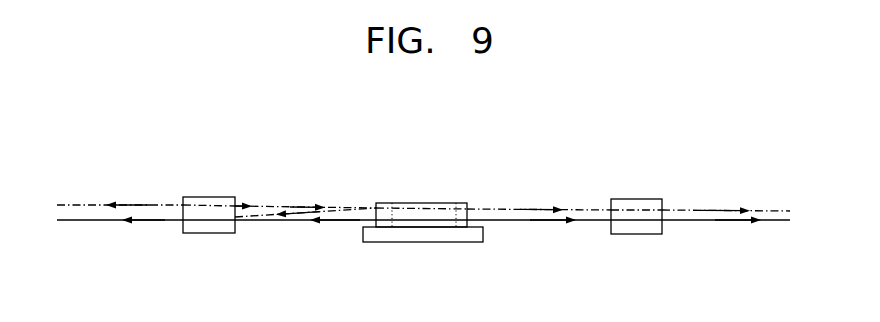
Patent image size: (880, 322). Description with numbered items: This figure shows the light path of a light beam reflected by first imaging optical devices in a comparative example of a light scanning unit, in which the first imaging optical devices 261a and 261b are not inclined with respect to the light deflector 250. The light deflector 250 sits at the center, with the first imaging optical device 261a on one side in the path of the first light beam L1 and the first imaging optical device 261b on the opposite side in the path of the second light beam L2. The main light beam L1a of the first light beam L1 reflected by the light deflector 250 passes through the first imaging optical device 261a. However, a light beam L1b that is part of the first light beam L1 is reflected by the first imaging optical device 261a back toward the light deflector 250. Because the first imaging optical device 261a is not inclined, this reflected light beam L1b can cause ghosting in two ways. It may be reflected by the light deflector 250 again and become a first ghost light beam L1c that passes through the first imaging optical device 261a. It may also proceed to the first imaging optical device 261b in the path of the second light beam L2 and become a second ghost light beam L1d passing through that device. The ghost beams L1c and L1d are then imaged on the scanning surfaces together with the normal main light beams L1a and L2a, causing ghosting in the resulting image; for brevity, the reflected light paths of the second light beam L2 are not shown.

The main light beam L1a is at (85, 221).
The first ghost light beam L1c is at (157, 204).
The light beam reflected by the first imaging optical device L1b is at (302, 210).
The first light beam L1 is at (330, 221).
The second ghost light beam L1d is at (522, 209).
The second light beam L2 is at (535, 221).
The normal main light beam of the second light beam L2a is at (711, 221).
The first imaging optical device 261a is at (208, 233).
The first imaging optical device 261b is at (637, 234).
The light deflector 250 is at (430, 242).